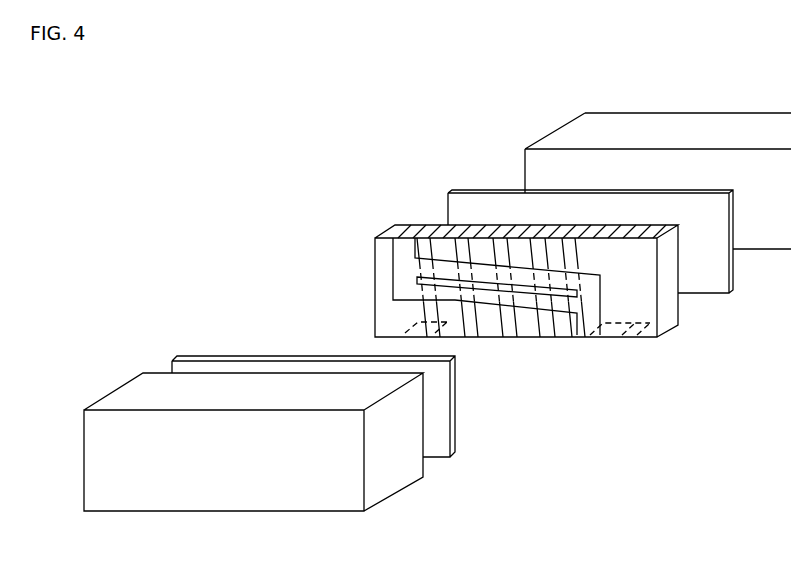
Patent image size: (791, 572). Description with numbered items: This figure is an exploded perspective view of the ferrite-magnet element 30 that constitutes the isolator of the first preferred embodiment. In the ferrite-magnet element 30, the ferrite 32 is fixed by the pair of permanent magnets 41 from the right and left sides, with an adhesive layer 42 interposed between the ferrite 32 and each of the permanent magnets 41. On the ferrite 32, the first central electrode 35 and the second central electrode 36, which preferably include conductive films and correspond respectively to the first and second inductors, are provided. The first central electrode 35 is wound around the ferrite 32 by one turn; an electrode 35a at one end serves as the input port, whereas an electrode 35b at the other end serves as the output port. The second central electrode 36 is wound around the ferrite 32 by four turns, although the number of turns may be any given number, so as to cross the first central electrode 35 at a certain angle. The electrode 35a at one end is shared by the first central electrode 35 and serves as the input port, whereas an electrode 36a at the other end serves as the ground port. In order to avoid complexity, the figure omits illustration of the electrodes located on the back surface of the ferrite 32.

The ferrite-magnet element 30 is at (484, 99).
The ferrite 32 is at (362, 264).
The first central electrode 35 is at (536, 304).
The electrode 35a is at (612, 330).
The electrode 35b is at (655, 326).
The second central electrode 36 is at (517, 239).
The electrode 36a is at (432, 328).
The permanent magnets 41 is at (697, 126).
The adhesive layer 42 is at (713, 294).